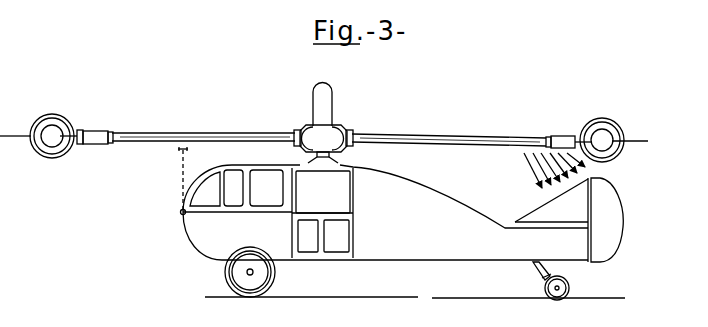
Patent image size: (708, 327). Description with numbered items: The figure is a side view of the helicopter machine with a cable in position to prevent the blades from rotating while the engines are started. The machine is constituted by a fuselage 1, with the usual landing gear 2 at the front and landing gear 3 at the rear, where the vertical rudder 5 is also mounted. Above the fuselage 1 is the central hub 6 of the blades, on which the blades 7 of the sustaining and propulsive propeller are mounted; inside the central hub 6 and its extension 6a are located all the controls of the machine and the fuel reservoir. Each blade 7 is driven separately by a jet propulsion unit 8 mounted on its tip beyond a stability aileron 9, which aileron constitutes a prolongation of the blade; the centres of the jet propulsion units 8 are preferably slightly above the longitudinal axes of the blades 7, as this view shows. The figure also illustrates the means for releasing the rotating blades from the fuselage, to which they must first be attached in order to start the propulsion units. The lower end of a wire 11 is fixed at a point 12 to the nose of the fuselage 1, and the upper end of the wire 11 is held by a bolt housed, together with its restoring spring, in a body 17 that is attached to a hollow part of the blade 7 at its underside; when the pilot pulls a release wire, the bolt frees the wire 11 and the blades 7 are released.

The fuselage 1 is at (422, 264).
The landing gear 2 is at (253, 283).
The landing gear 3 is at (552, 297).
The vertical rudder 5 is at (612, 232).
The central hub 6 is at (326, 134).
The extension 6a is at (328, 99).
The blade 7 is at (234, 137).
The jet propulsion unit 8 is at (55, 150).
The stability aileron 9 is at (94, 134).
The wire 11 is at (181, 187).
The fixing point 12 is at (182, 216).
The body 17 is at (174, 153).